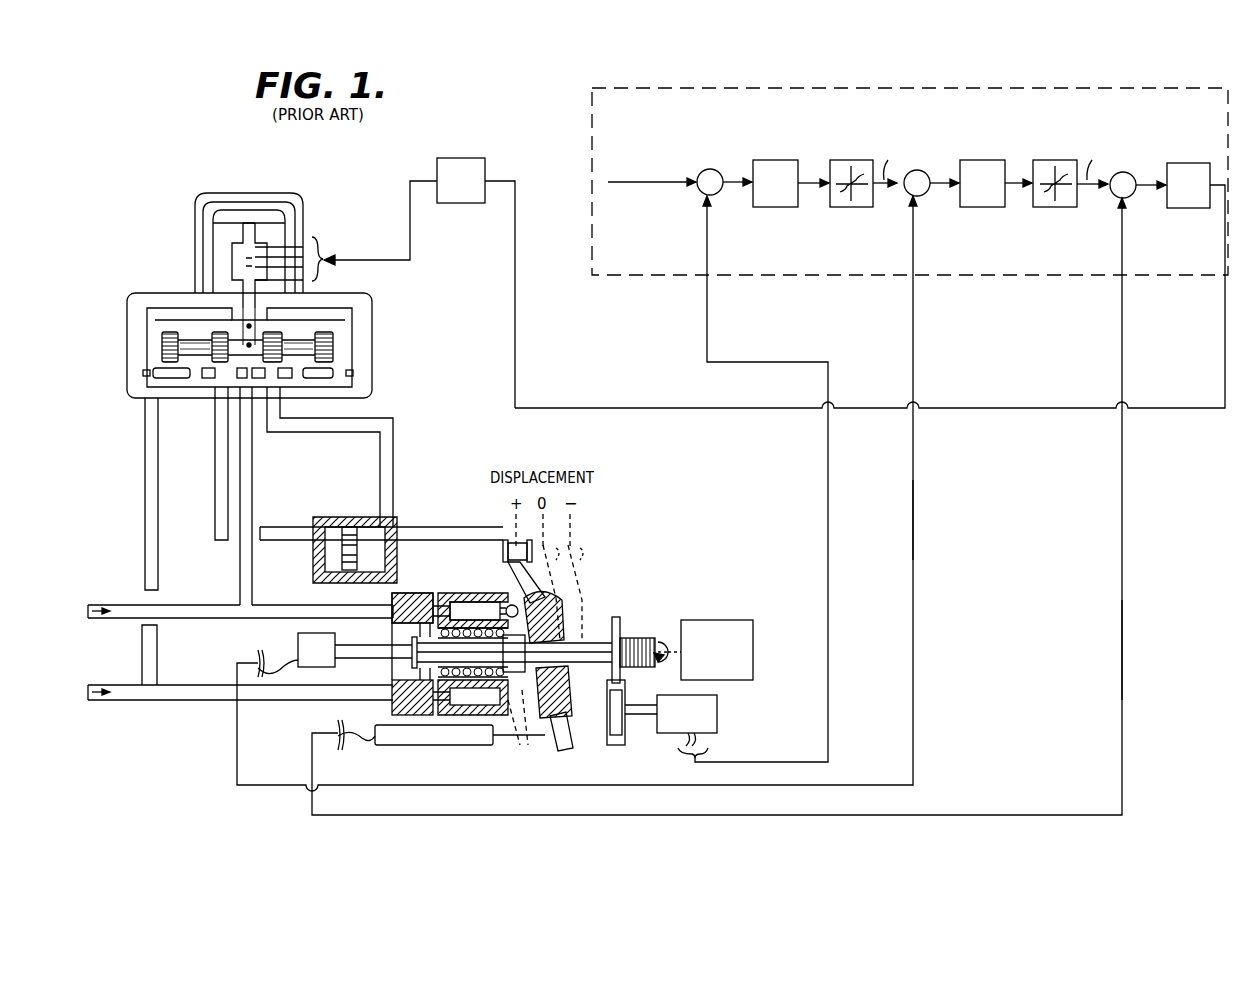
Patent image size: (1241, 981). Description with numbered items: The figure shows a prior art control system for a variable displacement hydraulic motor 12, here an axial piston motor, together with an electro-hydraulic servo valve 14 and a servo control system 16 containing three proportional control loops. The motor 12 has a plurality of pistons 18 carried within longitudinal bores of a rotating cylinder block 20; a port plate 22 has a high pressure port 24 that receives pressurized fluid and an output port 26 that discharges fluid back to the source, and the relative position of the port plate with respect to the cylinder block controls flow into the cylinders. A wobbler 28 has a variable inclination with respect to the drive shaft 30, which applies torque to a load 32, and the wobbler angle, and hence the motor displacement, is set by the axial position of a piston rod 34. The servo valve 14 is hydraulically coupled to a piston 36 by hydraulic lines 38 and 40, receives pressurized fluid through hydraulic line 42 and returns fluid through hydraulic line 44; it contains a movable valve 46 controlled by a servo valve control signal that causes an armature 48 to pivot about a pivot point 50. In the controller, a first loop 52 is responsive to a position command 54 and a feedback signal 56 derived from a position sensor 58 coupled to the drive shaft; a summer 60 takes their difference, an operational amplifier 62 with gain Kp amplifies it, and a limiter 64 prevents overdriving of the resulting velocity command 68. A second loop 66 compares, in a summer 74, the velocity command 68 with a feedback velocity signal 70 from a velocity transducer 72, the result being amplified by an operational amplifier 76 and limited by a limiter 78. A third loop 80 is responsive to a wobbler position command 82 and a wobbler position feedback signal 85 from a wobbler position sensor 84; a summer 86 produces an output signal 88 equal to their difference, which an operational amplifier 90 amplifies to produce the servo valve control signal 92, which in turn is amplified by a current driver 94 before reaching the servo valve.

The variable displacement hydraulic motor 12 is at (431, 472).
The electro-hydraulic servo valve 14 is at (236, 188).
The servo control system 16 is at (586, 124).
The pistons 18 is at (455, 597).
The cylinder block 20 is at (478, 597).
The port plate 22 is at (420, 597).
The high pressure port 24 is at (391, 698).
The output port 26 is at (391, 612).
The wobbler 28 is at (563, 678).
The drive shaft 30 is at (591, 641).
The load 32 is at (722, 620).
The piston rod 34 is at (434, 547).
The piston 36 is at (314, 550).
The hydraulic line 38 is at (285, 432).
The hydraulic line 40 is at (215, 445).
The hydraulic line 42 is at (145, 500).
The hydraulic line 44 is at (238, 582).
The movable valve 46 is at (335, 345).
The armature 48 is at (246, 296).
The pivot point 50 is at (246, 262).
The first loop 52 is at (696, 320).
The position command 54 is at (646, 162).
The feedback signal 56 is at (709, 230).
The position sensor 58 is at (717, 705).
The summer 60 is at (718, 168).
The operational amplifier 62 is at (775, 160).
The limiter 64 is at (836, 160).
The second loop 66 is at (922, 512).
The velocity command 68 is at (914, 147).
The feedback velocity signal 70 is at (915, 352).
The velocity transducer 72 is at (298, 641).
The summer 74 is at (923, 197).
The operational amplifier 76 is at (978, 207).
The limiter 78 is at (1052, 207).
The third loop 80 is at (1133, 644).
The wobbler position command 82 is at (1120, 141).
The wobbler position sensor 84 is at (418, 745).
The wobbler position feedback signal 85 is at (1122, 308).
The summer 86 is at (1110, 194).
The output signal 88 is at (1145, 192).
The operational amplifier 90 is at (1192, 163).
The servo valve control signal 92 is at (1222, 356).
The current driver 94 is at (446, 158).